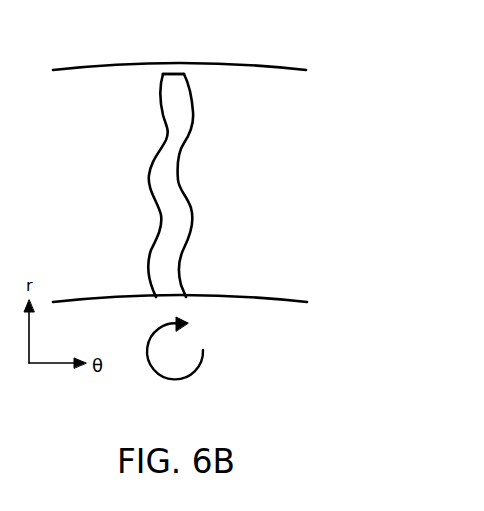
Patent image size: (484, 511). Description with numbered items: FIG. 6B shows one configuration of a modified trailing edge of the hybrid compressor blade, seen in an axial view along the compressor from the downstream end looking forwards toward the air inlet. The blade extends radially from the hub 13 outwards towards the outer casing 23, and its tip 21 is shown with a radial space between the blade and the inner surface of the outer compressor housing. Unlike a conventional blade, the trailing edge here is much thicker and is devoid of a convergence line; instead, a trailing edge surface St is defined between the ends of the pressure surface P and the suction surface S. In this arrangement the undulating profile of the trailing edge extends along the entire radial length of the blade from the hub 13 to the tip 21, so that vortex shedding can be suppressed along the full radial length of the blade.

The hub 13 is at (283, 302).
The tip 21 is at (177, 73).
The outer casing 23 is at (300, 64).
The pressure surface P is at (193, 213).
The suction surface S is at (150, 168).
The trailing edge surface St is at (180, 135).